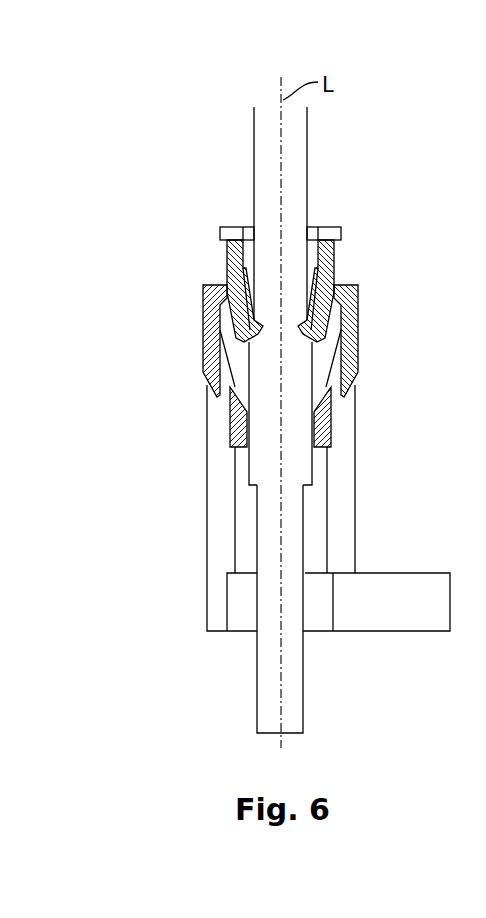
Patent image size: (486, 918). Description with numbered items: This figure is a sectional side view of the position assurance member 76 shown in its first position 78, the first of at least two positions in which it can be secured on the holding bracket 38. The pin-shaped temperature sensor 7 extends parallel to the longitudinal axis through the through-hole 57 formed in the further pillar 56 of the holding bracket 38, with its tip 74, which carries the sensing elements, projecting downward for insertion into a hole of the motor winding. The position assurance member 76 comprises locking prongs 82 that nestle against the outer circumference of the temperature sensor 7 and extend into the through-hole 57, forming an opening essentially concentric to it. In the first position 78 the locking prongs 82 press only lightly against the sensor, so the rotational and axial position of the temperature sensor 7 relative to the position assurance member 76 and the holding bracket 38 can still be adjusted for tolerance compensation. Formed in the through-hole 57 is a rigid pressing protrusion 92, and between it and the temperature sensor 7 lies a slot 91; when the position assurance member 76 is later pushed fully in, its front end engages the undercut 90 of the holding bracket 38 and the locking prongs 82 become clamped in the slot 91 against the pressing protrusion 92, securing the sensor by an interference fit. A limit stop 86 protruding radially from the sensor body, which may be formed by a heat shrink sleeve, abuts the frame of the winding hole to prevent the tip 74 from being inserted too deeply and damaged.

The first position 78 is at (127, 84).
The temperature sensor 7 is at (263, 157).
The position assurance member 76 is at (232, 268).
The undercut 90 is at (222, 302).
The locking prong 82 is at (348, 315).
The pressing protrusion 92 is at (237, 410).
The slot 91 is at (241, 446).
The holding bracket 38 is at (343, 430).
The tip 74 is at (318, 494).
The limit stop 86 is at (257, 493).
The through-hole 57 is at (320, 552).
The further pillar 56 is at (222, 581).